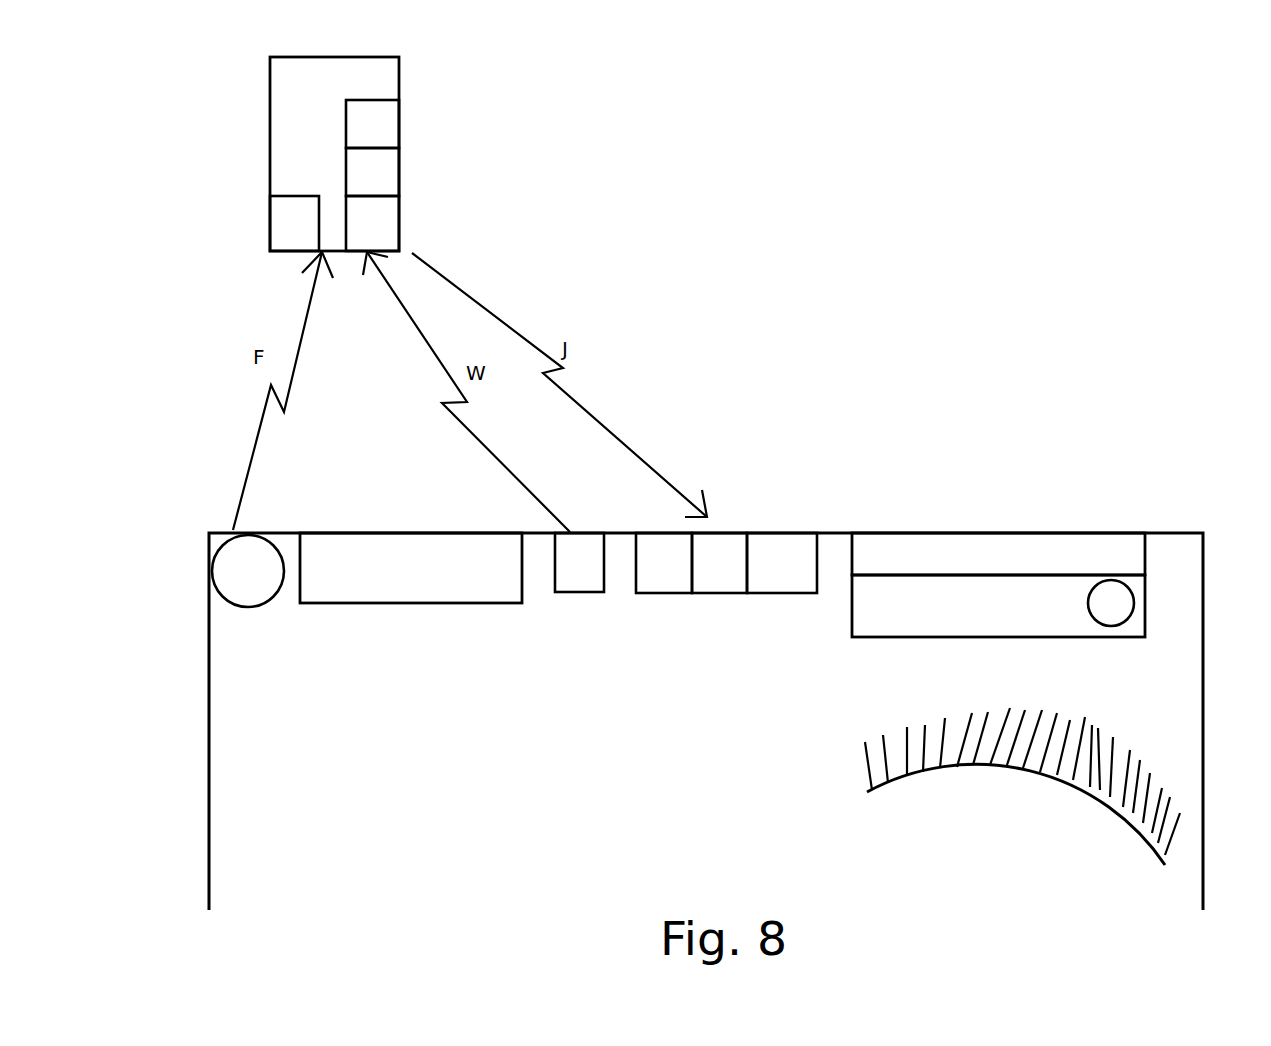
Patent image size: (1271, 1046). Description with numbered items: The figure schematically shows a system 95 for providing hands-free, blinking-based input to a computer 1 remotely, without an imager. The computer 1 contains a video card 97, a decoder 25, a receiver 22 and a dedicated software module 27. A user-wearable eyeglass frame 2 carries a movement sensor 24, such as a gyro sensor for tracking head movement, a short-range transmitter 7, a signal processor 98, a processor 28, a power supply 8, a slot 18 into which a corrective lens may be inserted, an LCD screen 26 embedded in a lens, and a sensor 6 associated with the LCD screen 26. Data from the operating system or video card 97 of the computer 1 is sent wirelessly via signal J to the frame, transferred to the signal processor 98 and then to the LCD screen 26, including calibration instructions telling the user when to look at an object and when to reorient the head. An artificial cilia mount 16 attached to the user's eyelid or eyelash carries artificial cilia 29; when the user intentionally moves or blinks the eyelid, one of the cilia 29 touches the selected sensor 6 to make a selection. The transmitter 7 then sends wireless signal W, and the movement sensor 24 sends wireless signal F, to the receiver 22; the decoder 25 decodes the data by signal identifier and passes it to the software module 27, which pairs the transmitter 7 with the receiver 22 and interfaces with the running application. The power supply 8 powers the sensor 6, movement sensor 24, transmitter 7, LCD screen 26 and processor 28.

The computer 1 is at (287, 117).
The video card 97 is at (388, 112).
The decoder 25 is at (388, 188).
The receiver 22 is at (385, 230).
The dedicated software module 27 is at (278, 238).
The system 95 is at (1025, 398).
The eyeglass frame 2 is at (209, 731).
The movement sensor 24 is at (228, 555).
The transmitter 7 is at (588, 533).
The signal processor 98 is at (653, 583).
The processor 28 is at (717, 585).
The power supply 8 is at (803, 542).
The slot 18 is at (1057, 548).
The LCD screen 26 is at (973, 590).
The sensor 6 is at (1132, 603).
The artificial cilia mount 16 is at (1023, 770).
The artificial cilia 29 is at (1120, 778).